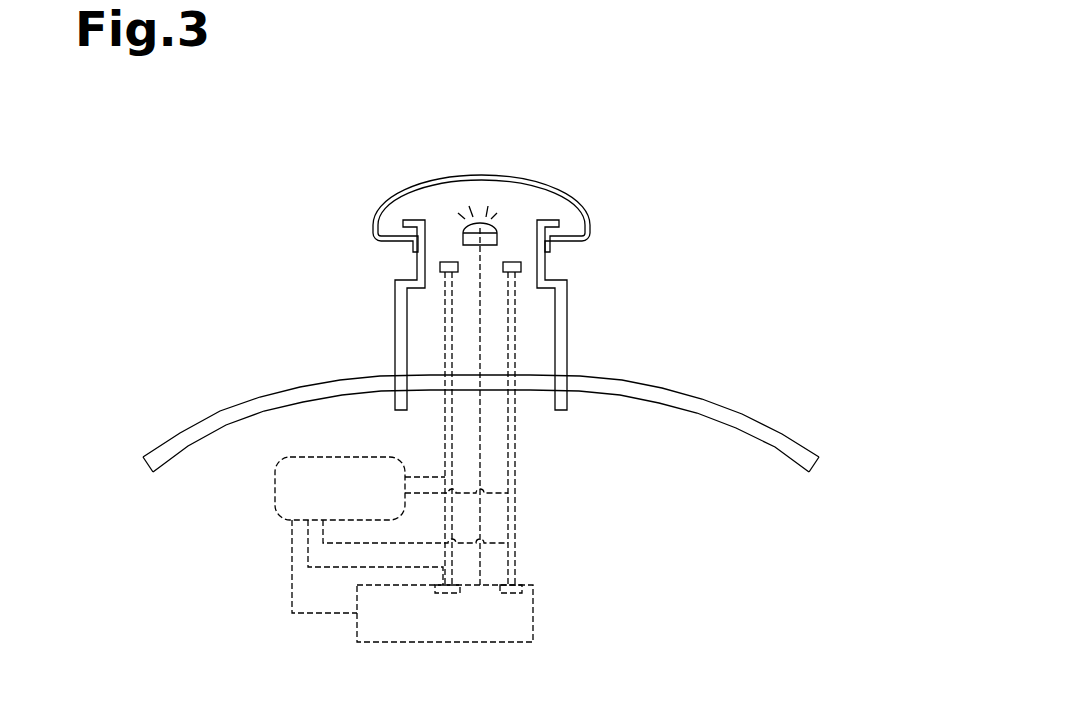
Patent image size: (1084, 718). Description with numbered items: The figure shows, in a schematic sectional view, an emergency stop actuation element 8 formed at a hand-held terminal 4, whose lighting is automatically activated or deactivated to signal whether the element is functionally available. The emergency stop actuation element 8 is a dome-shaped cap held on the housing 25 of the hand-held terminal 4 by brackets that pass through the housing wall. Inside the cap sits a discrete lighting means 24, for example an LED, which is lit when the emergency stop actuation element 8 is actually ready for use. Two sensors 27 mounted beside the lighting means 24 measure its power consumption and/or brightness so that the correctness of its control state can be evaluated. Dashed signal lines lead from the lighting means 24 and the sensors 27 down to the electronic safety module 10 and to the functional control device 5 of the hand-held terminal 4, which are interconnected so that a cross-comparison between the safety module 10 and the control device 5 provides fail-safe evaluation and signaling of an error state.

The hand-held terminal 4 is at (536, 353).
The housing 25 is at (280, 405).
The emergency stop actuation element 8 is at (593, 150).
The discrete lighting means 24 is at (483, 221).
The sensor 27 is at (440, 266).
The safety module 10 is at (258, 503).
The control device 5 is at (568, 630).